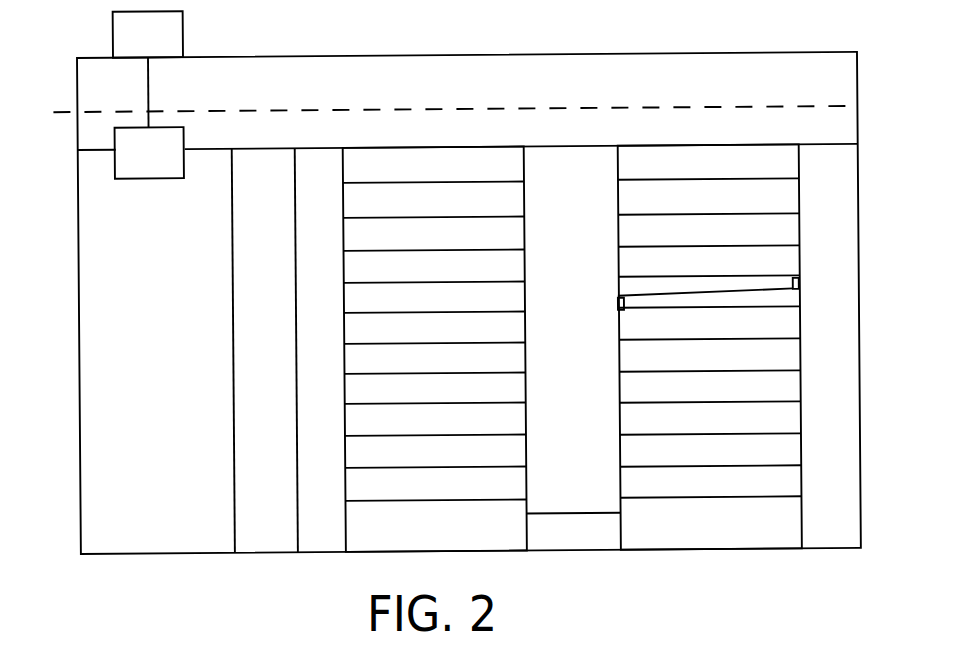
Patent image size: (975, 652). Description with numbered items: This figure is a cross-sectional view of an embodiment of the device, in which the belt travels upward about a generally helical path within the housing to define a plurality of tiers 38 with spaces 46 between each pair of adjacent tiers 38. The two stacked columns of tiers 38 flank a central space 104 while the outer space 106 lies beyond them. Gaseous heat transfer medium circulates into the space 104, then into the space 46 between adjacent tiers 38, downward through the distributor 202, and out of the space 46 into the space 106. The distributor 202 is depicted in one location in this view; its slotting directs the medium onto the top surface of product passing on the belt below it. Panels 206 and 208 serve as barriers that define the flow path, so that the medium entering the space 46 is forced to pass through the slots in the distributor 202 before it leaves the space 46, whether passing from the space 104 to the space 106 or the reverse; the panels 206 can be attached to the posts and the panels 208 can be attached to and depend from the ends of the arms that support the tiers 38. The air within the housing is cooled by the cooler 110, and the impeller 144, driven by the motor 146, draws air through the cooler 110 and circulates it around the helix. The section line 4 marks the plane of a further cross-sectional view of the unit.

The section line 4-4' 4 is at (465, 111).
The tiers 38 is at (639, 225).
The spaces 46 is at (709, 301).
The space 104 is at (506, 174).
The space 106 is at (577, 348).
The cooler 110 is at (265, 350).
The impeller 144 is at (149, 153).
The motor 146 is at (148, 69).
The distributor 202 is at (705, 271).
The panels 206 is at (821, 269).
The panels 208 is at (593, 327).